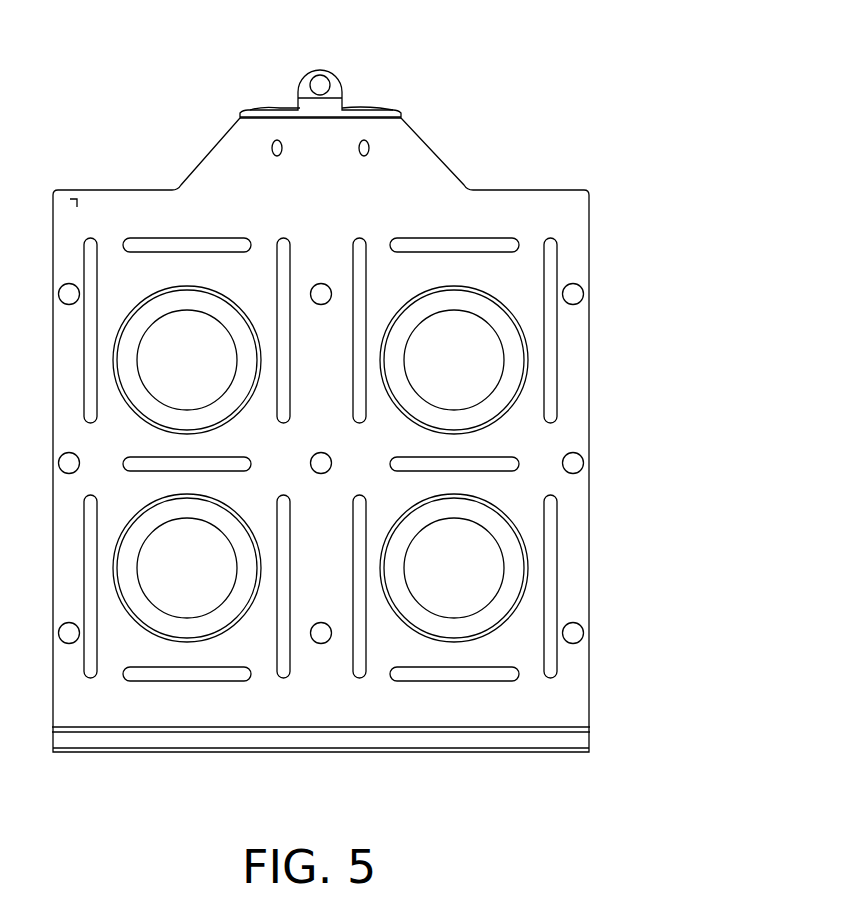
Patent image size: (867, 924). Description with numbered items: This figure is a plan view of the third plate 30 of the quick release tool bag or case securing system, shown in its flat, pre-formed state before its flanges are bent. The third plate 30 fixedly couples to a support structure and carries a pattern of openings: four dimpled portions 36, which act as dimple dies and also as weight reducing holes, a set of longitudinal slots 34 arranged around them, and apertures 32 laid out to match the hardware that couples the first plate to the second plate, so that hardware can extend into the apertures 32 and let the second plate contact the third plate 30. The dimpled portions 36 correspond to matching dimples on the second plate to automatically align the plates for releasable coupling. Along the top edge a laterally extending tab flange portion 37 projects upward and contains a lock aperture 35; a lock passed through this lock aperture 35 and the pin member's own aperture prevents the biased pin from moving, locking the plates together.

The third plate 30 is at (625, 322).
The apertures 32 is at (578, 470).
The longitudinal slots 34 is at (497, 238).
The lock aperture 35 is at (323, 80).
The dimpled portions 36 is at (150, 313).
The tab flange portion 37 is at (363, 117).